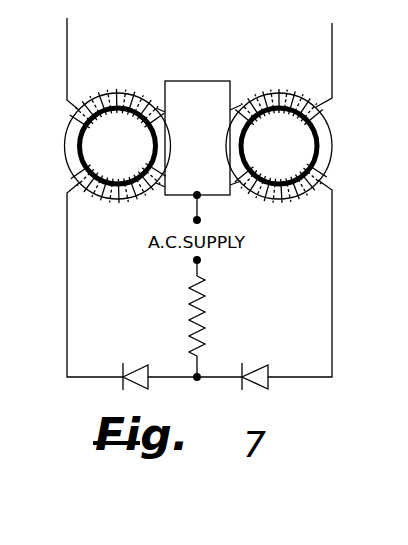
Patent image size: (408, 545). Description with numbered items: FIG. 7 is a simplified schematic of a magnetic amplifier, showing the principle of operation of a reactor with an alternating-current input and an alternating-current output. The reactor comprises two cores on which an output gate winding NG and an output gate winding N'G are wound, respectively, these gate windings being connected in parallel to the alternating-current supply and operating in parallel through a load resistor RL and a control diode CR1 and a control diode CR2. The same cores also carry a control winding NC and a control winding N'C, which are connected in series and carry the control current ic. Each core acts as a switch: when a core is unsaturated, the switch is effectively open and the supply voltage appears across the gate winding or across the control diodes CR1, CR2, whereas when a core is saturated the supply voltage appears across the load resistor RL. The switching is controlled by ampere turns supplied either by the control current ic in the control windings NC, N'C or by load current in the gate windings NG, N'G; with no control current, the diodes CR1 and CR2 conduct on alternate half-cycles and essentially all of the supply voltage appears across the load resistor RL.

The control winding NC is at (92, 96).
The output gate winding NG is at (95, 194).
The control winding N'C is at (279, 129).
The output gate winding N'G is at (281, 198).
The control current ic is at (213, 72).
The load resistor RL is at (206, 297).
The control diode CR1 is at (148, 364).
The control diode CR2 is at (257, 368).